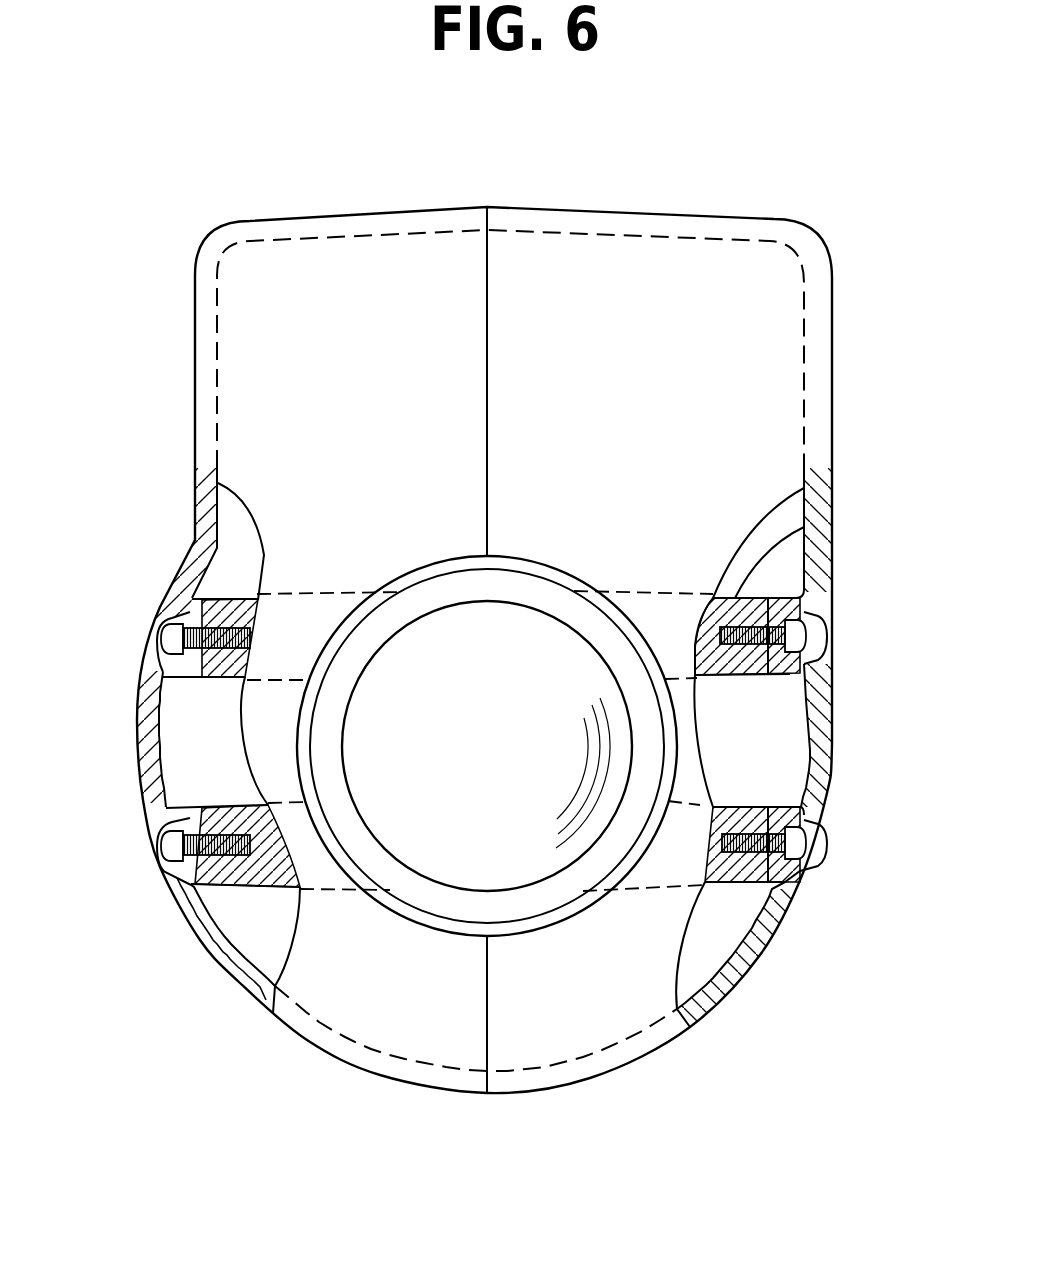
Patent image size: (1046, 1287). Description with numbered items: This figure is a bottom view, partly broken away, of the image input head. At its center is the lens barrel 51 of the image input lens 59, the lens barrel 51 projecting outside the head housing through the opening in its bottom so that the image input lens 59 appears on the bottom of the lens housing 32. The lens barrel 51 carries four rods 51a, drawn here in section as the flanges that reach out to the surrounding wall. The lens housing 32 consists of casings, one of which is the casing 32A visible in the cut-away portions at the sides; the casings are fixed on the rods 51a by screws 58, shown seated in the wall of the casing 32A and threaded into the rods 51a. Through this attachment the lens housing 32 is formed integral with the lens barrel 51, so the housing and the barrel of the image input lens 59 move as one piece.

The lens housing 32 is at (554, 1101).
The casing 32A is at (223, 953).
The lens barrel 51 is at (432, 898).
The rod 51a is at (804, 527).
The screw 58 is at (166, 638).
The image input lens 59 is at (478, 871).